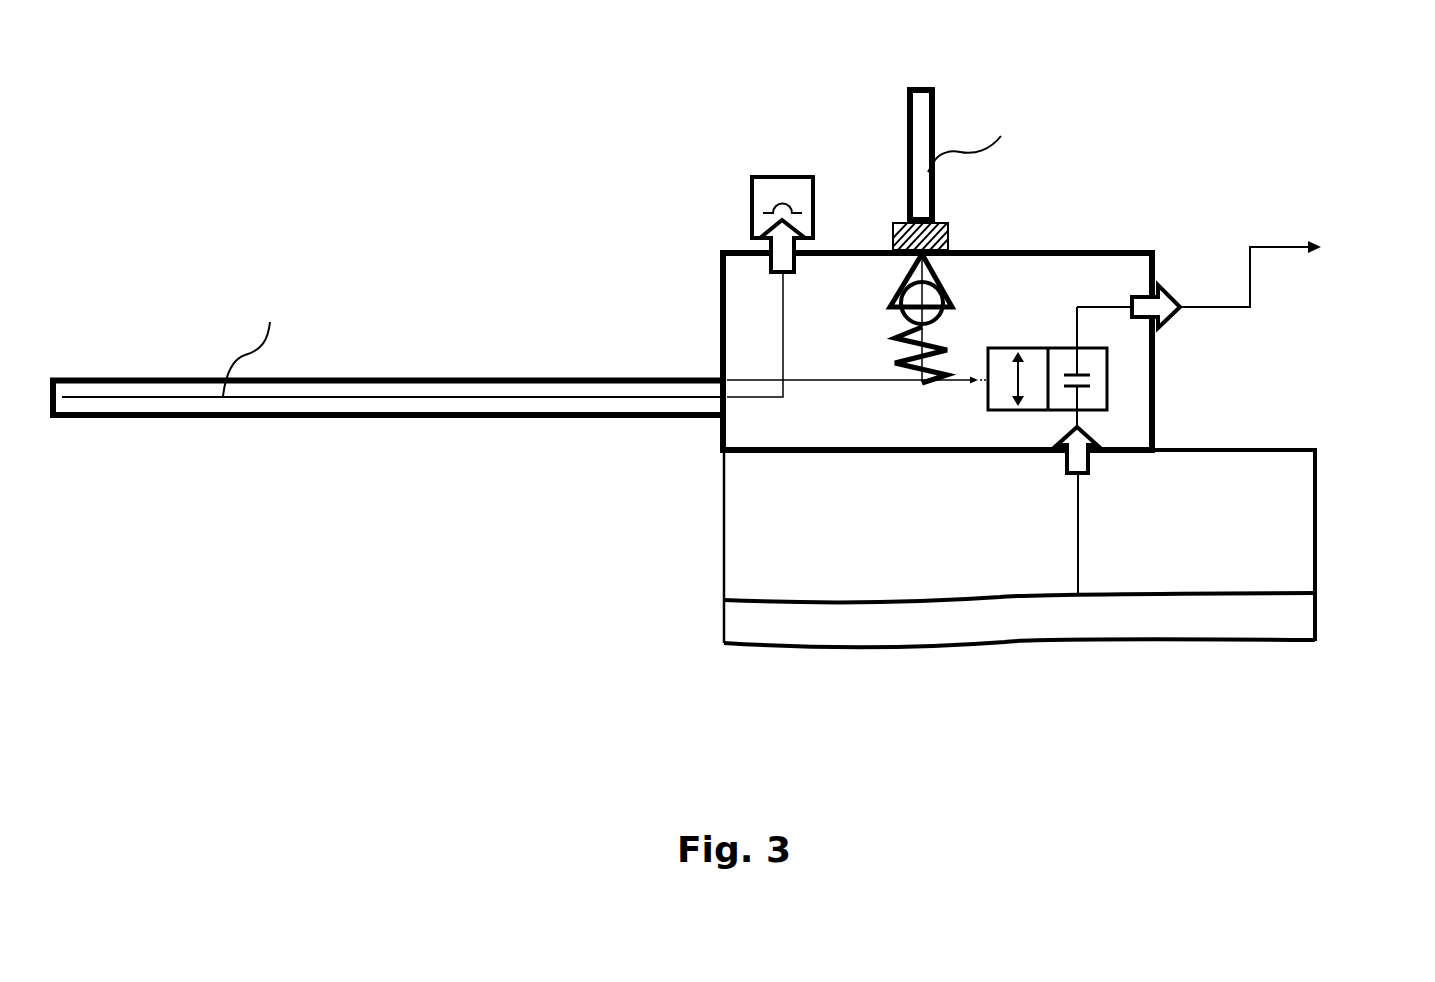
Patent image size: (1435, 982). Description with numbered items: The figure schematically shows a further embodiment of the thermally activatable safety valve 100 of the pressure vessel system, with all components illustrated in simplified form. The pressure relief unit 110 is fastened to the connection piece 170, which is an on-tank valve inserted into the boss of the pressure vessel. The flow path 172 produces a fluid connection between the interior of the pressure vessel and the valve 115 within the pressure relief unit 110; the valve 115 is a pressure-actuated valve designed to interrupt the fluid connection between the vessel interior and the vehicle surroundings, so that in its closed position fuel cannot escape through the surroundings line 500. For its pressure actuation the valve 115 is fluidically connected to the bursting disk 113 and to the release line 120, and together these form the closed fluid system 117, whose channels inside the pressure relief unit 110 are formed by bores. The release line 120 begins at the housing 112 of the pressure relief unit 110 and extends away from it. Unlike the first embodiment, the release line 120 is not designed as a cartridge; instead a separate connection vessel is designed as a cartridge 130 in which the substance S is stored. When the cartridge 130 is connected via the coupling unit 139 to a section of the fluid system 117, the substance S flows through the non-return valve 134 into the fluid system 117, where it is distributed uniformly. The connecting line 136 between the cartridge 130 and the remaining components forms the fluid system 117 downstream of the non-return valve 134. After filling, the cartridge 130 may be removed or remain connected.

The safety valve 100 is at (566, 522).
The pressure relief unit 110 is at (1190, 380).
The housing 112 is at (1118, 252).
The bursting disk 113 is at (794, 178).
The valve 115 is at (1066, 348).
The fluid system 117 is at (848, 380).
The release line 120 is at (428, 378).
The cartridge 130 is at (927, 117).
The non-return valve 134 is at (900, 285).
The connecting line 136 is at (925, 337).
The coupling unit 139 is at (950, 222).
The connection piece 170 is at (1292, 517).
The flow path 172 is at (1080, 462).
The surroundings line 500 is at (1170, 290).